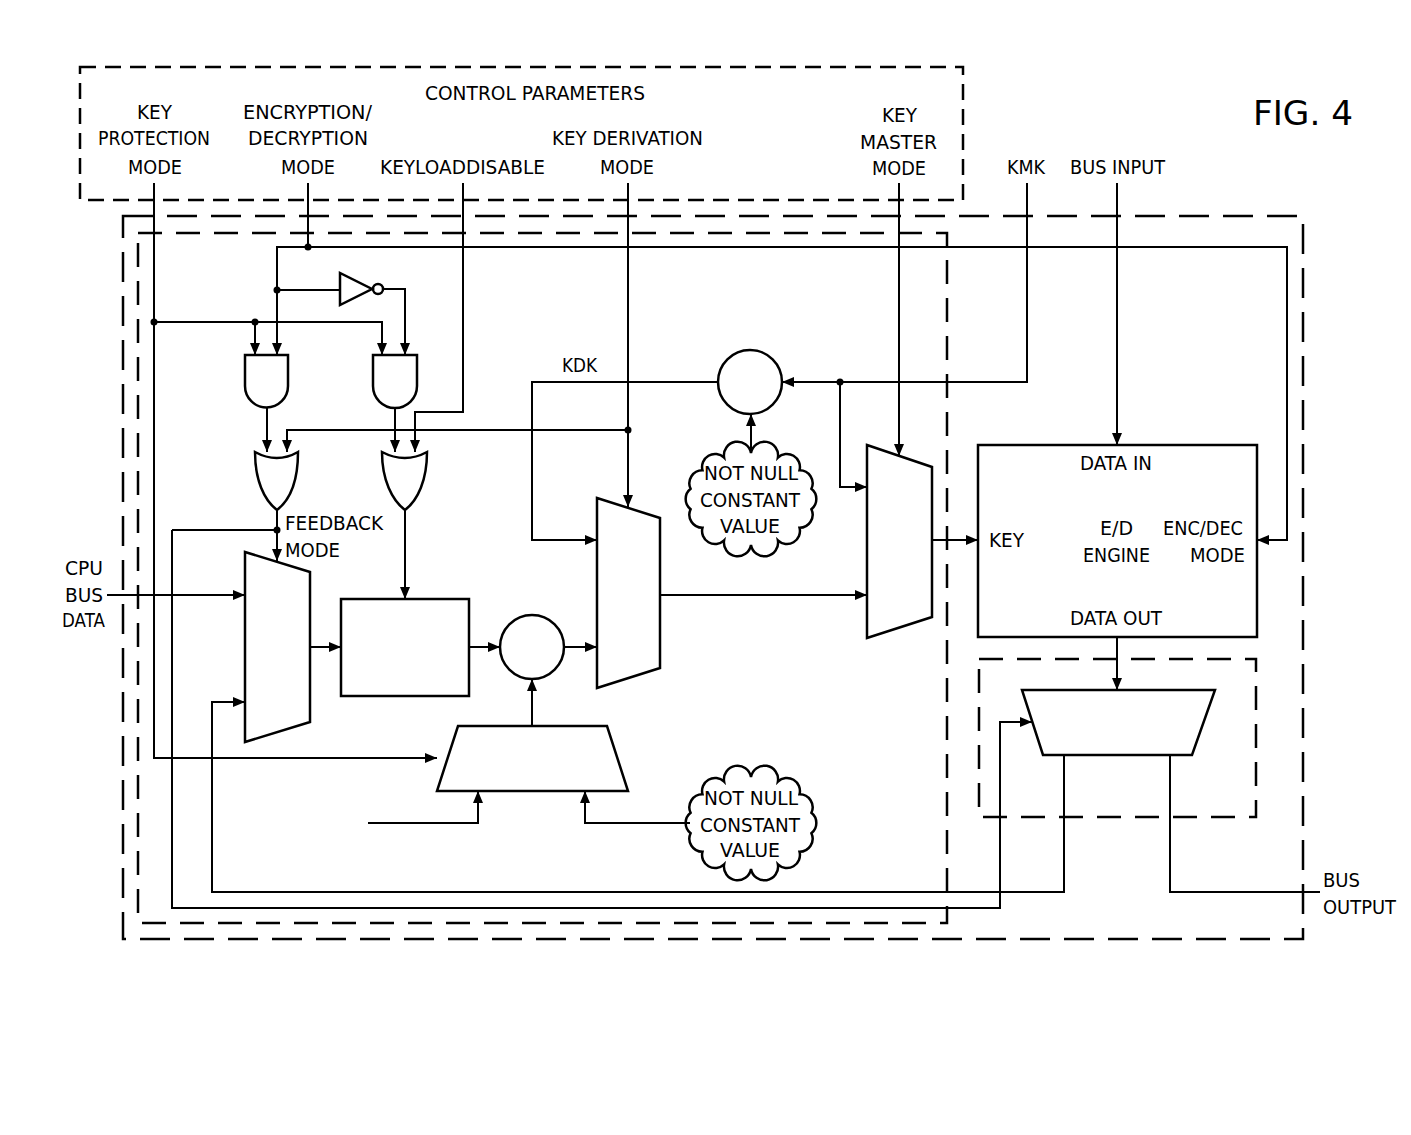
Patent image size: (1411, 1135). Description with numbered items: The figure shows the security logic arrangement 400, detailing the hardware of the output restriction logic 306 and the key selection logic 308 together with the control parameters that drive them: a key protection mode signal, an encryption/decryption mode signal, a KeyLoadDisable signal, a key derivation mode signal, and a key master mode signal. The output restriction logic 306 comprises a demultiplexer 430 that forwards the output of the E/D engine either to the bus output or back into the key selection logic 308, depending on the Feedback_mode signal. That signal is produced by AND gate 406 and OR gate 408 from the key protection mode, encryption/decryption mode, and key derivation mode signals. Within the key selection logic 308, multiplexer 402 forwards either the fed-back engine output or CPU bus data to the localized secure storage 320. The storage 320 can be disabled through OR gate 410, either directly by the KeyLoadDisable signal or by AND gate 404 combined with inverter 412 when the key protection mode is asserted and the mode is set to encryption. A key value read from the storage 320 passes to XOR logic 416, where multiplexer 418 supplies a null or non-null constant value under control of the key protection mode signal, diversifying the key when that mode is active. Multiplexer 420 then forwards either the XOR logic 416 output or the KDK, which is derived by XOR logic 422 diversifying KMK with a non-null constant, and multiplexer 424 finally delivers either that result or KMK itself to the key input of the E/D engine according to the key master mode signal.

The key management system 400 is at (1081, 122).
The output restriction logic 306 is at (1219, 822).
The key selection logic 308 is at (950, 334).
The localized secure storage 320 is at (383, 698).
The multiplexer 402 is at (245, 657).
The AND gate 404 is at (373, 370).
The AND gate 406 is at (245, 370).
The OR gate 408 is at (255, 470).
The OR gate 410 is at (382, 470).
The inverter 412 is at (368, 272).
The XOR logic 416 is at (536, 616).
The multiplexer 418 is at (522, 795).
The multiplexer 420 is at (663, 628).
The XOR logic 422 is at (758, 349).
The multiplexer 424 is at (900, 632).
The demultiplexer 430 is at (1128, 757).